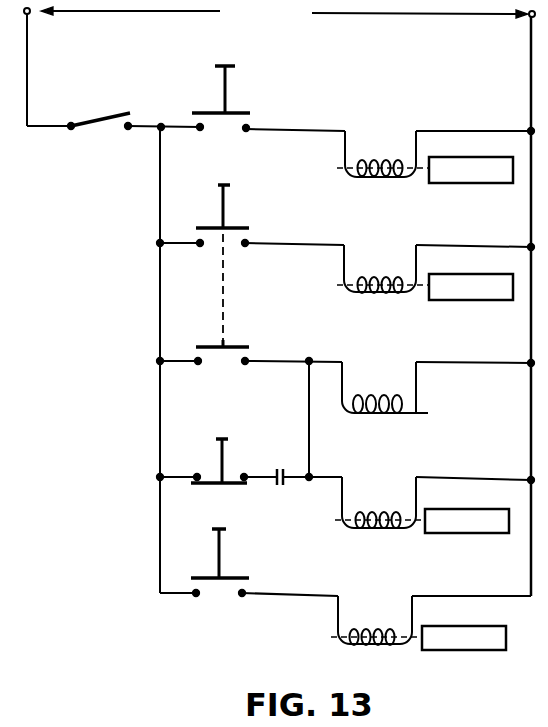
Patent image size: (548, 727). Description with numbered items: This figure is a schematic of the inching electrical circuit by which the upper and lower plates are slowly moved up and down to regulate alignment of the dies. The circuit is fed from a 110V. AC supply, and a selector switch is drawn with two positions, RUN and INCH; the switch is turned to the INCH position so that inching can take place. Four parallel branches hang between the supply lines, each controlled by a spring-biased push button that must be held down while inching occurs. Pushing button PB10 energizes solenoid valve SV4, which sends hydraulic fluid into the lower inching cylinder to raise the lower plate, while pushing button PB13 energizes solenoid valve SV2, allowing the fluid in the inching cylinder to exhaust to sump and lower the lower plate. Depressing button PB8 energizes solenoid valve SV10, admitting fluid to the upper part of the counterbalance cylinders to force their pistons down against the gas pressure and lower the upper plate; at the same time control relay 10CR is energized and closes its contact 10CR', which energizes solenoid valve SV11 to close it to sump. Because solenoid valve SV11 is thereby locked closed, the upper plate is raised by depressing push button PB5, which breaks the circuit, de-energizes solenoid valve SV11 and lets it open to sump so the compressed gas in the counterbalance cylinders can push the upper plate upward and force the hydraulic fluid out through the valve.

The 110 volt AC supply line 110V. AC is at (279, 13).
The run position of selector switch RUN is at (99, 108).
The inch position INCH is at (147, 138).
The push button PB10 is at (226, 96).
The push button PB8 is at (224, 211).
The push button PB5 is at (223, 455).
The push button PB13 is at (221, 558).
The solenoid valve SV4 is at (454, 138).
The solenoid valve SV10 is at (486, 274).
The control relay 10CR is at (404, 394).
The contact 10CR' is at (286, 494).
The solenoid valve SV11 is at (485, 509).
The solenoid valve SV2 is at (483, 627).